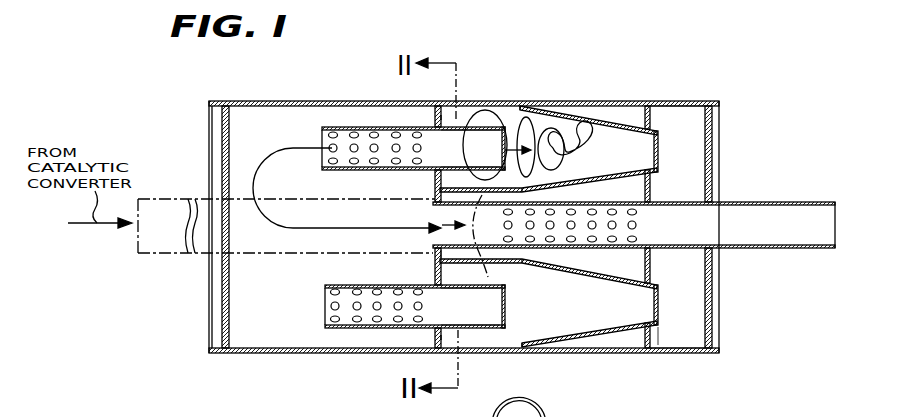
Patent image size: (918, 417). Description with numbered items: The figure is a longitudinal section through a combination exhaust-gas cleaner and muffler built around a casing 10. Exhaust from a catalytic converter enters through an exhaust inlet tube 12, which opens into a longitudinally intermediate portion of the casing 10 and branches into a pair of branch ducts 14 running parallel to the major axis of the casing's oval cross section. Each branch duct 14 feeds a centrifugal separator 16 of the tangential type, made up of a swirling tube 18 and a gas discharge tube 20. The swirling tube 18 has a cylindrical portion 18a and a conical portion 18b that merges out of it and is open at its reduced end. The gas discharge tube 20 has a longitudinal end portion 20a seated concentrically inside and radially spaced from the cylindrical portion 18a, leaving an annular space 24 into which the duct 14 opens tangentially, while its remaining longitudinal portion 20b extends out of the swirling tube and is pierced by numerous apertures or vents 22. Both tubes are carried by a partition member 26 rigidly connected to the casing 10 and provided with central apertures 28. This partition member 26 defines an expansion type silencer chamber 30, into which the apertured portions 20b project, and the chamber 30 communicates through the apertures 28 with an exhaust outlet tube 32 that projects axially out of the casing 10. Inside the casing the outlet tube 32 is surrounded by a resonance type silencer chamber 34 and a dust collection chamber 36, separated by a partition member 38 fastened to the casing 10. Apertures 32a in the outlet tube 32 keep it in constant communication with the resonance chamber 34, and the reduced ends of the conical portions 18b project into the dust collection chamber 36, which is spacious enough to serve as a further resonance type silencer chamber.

The casing 10 is at (258, 100).
The exhaust inlet tube 12 is at (172, 257).
The branch ducts 14 is at (433, 177).
The centrifugal separators 16 is at (413, 119).
The swirling tube 18 is at (572, 110).
The cylindrical portion 18a is at (522, 103).
The conical portion 18b is at (605, 117).
The gas discharge tube 20 is at (362, 125).
The longitudinal end portion 20a is at (465, 122).
The remaining longitudinal portion 20b is at (338, 131).
The apertures or vents 22 is at (333, 161).
The annular space 24 is at (437, 117).
The partition member 26 is at (450, 276).
The apertures 28 is at (433, 236).
The expansion type silencer chamber 30 is at (235, 170).
The exhaust outlet tube 32 is at (745, 248).
The apertures 32a is at (633, 225).
The resonance type silencer chamber 34 is at (630, 115).
The dust collection chamber 36 is at (690, 127).
The partition member 38 is at (665, 332).